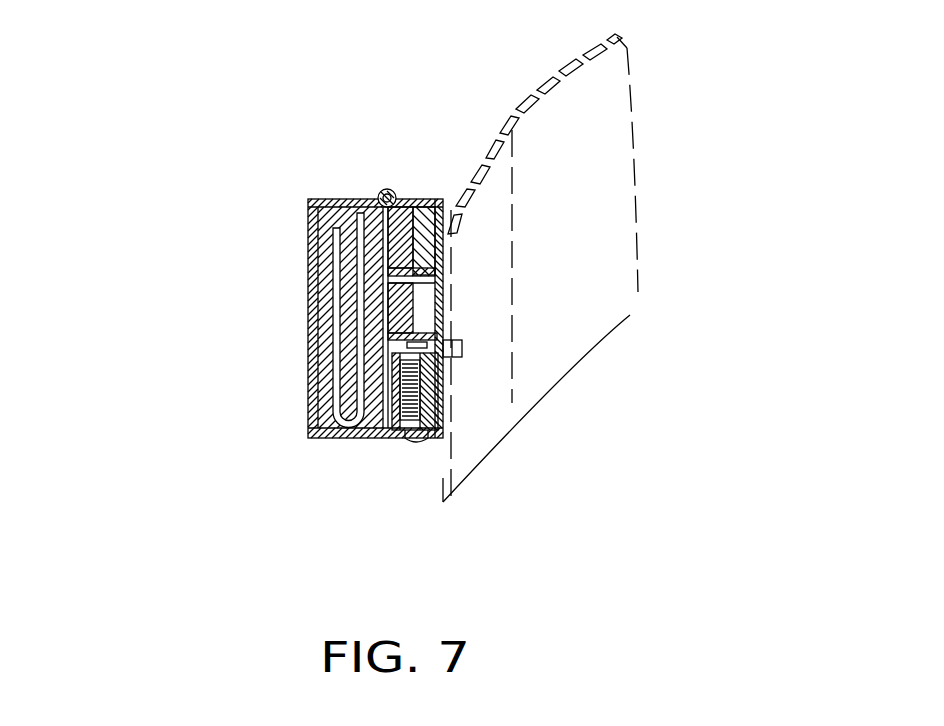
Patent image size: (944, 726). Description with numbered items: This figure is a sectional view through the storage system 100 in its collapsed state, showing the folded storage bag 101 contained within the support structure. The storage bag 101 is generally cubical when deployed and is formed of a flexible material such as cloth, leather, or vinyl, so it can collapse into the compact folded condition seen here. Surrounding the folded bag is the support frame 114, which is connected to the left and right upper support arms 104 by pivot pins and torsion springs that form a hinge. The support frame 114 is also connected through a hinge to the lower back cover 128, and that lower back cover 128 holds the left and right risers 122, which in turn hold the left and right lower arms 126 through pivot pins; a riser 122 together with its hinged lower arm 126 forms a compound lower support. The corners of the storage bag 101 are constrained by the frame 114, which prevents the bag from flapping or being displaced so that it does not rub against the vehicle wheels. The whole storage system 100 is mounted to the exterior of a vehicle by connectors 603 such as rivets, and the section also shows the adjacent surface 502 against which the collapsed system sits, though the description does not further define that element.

The storage system 100 is at (308, 328).
The storage bag 101 is at (322, 277).
The upper support arm 104 is at (400, 415).
The support frame 114 is at (430, 197).
The riser 122 is at (428, 241).
The lower arm 126 is at (440, 255).
The lower back cover 128 is at (448, 366).
The vehicle body panel 502 is at (612, 90).
The connector 603 is at (461, 355).